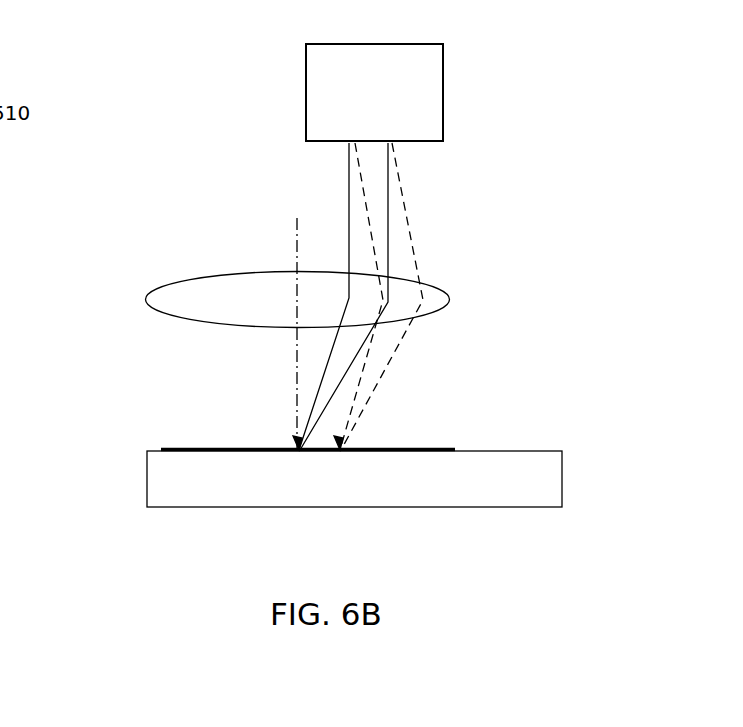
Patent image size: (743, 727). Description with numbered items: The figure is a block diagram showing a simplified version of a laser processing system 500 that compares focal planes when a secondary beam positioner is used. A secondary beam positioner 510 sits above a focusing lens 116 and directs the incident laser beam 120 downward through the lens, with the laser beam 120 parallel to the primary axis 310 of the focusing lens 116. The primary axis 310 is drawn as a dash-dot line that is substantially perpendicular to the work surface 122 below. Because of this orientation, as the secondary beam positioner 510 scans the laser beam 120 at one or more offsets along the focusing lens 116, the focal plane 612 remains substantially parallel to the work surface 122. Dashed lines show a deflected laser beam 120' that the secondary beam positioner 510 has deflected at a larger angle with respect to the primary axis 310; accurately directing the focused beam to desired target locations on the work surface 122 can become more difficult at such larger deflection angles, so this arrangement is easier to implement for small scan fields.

The system 500 is at (226, 99).
The secondary beam positioner 510 is at (443, 75).
The laser beam 120 is at (330, 296).
The deflected laser beam 120' is at (422, 296).
The focusing lens 116 is at (218, 273).
The primary axis 310 is at (297, 345).
The focal plane 612 is at (447, 450).
The work surface 122 is at (512, 451).